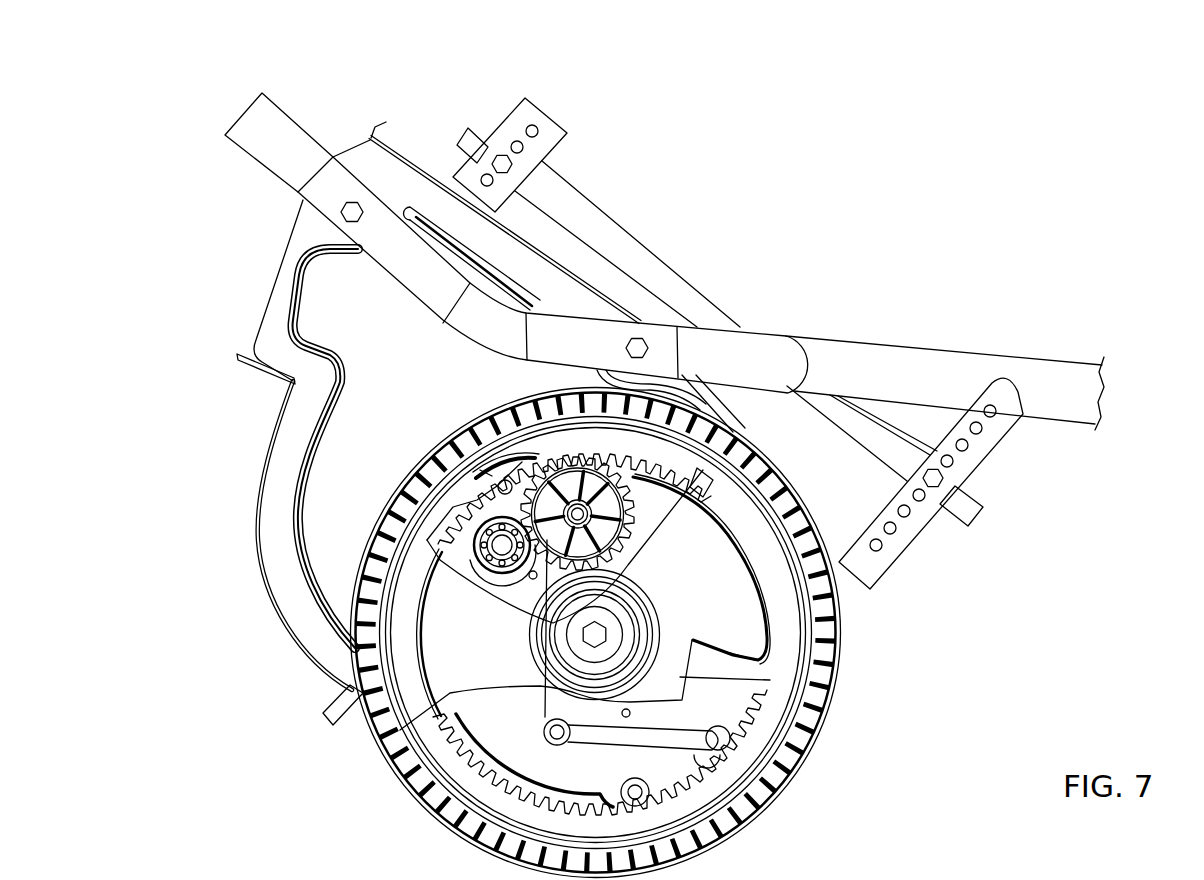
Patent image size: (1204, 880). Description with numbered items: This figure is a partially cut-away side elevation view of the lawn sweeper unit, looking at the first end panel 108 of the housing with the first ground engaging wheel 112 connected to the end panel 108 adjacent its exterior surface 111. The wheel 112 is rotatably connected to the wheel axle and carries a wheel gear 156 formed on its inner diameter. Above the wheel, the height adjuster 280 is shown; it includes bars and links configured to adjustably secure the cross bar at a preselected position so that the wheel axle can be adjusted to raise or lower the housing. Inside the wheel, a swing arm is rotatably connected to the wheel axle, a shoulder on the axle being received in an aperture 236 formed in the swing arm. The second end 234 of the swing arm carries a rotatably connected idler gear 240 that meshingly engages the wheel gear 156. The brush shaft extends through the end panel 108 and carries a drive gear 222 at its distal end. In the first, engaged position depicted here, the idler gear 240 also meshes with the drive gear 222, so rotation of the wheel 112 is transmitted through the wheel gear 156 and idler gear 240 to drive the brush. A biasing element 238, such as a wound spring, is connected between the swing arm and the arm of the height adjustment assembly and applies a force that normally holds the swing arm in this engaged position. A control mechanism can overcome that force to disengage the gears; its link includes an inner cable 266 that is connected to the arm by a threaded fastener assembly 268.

The first end panel 108 is at (268, 324).
The exterior surface 111 is at (381, 316).
The first ground engaging wheel 112 is at (788, 807).
The wheel gear 156 is at (438, 812).
The drive gear 222 is at (498, 573).
The second end 234 is at (545, 730).
The aperture 236 is at (496, 486).
The biasing element 238 is at (614, 751).
The idler gear 240 is at (640, 528).
The inner cable 266 is at (513, 463).
The threaded fastener assembly 268 is at (487, 473).
The height adjuster 280 is at (678, 279).